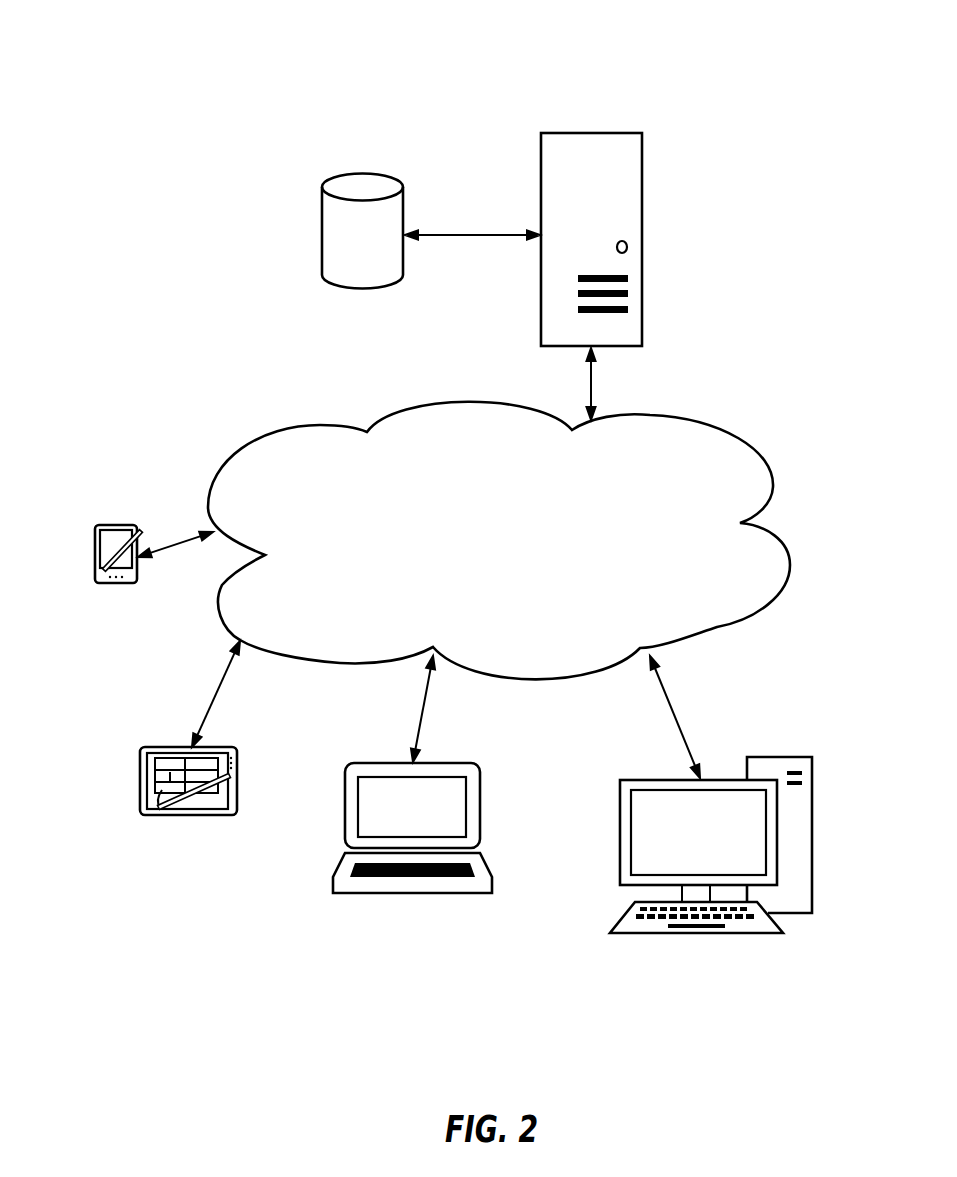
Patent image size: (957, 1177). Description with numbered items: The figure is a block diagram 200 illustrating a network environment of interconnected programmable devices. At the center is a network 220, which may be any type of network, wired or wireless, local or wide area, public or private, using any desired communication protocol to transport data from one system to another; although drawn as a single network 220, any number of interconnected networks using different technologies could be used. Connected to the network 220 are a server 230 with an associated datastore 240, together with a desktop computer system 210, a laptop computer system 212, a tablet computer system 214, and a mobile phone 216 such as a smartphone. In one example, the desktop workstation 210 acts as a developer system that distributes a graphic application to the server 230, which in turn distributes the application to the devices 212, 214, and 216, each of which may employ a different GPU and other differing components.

The block diagram 200 is at (307, 73).
The desktop computer system 210 is at (813, 780).
The laptop computer system 212 is at (345, 793).
The tablet computer system 214 is at (140, 767).
The mobile phone 216 is at (95, 545).
The network 220 is at (240, 448).
The server 230 is at (642, 143).
The datastore 240 is at (322, 207).